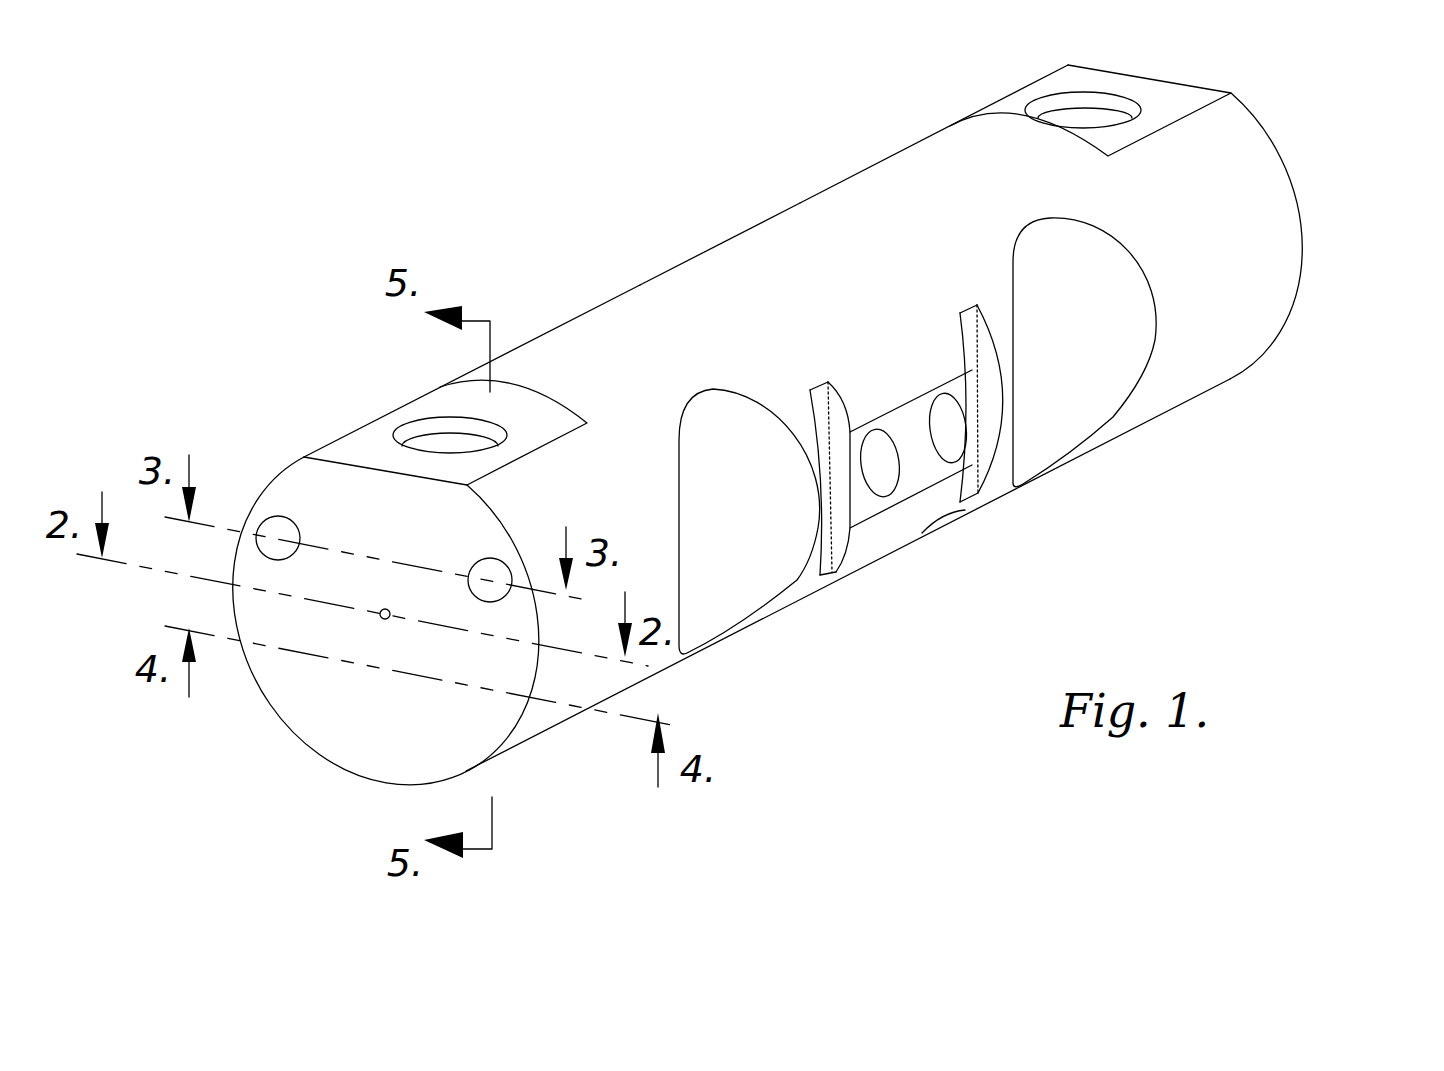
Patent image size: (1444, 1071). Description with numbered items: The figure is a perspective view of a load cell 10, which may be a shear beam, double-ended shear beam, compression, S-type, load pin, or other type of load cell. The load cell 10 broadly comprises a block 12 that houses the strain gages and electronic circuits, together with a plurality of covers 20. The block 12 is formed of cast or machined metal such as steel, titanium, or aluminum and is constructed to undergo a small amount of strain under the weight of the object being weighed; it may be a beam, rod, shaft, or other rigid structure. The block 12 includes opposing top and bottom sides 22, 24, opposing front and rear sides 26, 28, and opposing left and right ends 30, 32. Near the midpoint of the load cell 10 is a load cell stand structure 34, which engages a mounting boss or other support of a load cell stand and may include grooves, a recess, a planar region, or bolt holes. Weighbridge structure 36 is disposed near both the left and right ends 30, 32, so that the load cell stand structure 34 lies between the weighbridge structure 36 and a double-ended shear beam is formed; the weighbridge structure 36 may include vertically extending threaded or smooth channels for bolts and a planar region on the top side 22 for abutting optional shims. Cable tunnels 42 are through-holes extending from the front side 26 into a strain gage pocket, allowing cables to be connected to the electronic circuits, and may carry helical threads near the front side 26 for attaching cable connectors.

The load cell 10 is at (517, 147).
The block 12 is at (707, 272).
The covers 20 is at (747, 590).
The top side 22 is at (913, 183).
The bottom side 24 is at (963, 538).
The front side 26 is at (1227, 284).
The rear side 28 is at (613, 285).
The left end 30 is at (333, 702).
The right end 32 is at (1298, 161).
The load cell stand structure 34 is at (897, 557).
The weighbridge structure 36 is at (435, 437).
The cable tunnels 42 is at (945, 427).